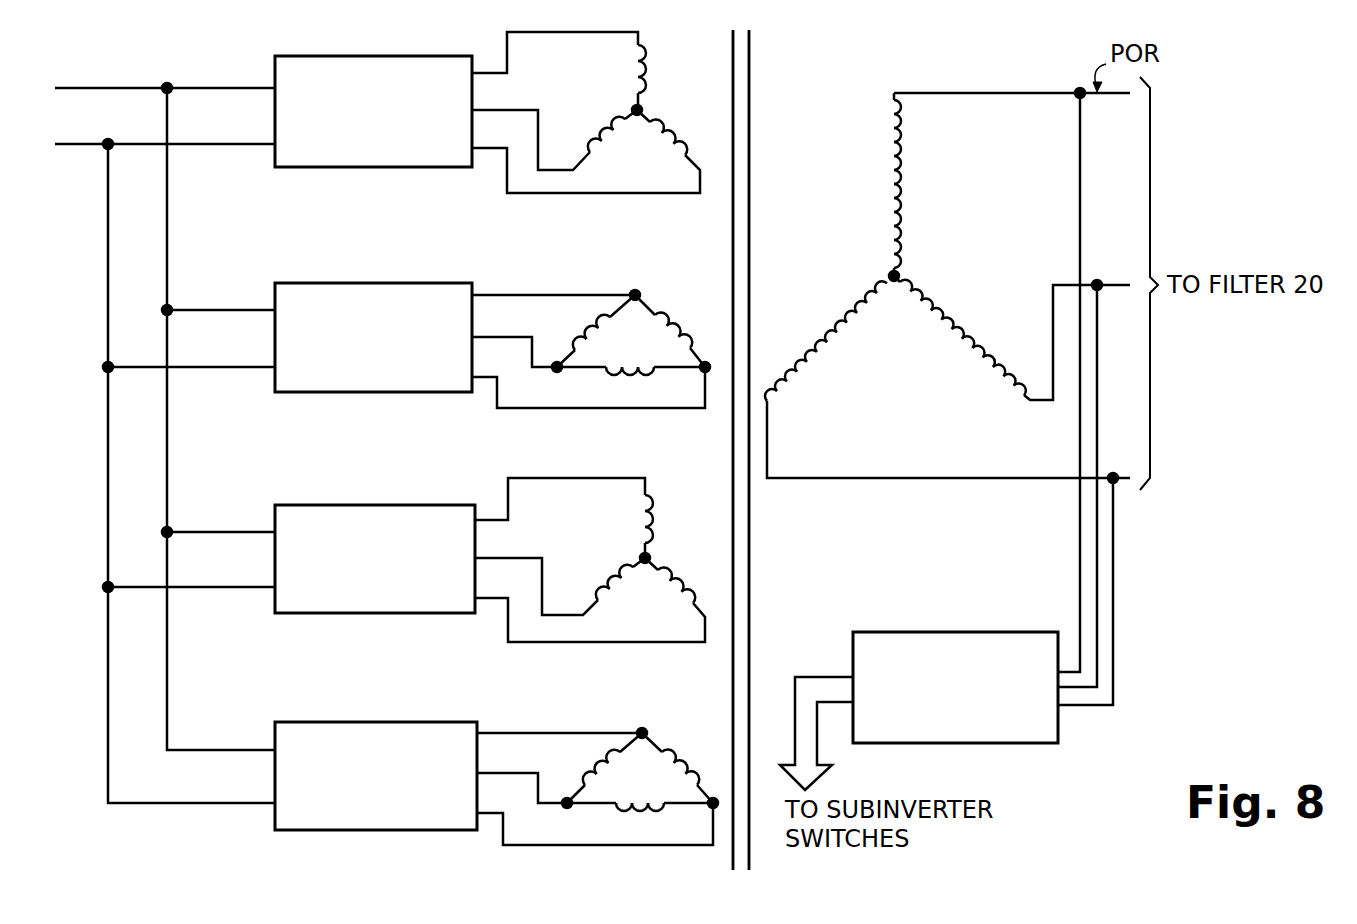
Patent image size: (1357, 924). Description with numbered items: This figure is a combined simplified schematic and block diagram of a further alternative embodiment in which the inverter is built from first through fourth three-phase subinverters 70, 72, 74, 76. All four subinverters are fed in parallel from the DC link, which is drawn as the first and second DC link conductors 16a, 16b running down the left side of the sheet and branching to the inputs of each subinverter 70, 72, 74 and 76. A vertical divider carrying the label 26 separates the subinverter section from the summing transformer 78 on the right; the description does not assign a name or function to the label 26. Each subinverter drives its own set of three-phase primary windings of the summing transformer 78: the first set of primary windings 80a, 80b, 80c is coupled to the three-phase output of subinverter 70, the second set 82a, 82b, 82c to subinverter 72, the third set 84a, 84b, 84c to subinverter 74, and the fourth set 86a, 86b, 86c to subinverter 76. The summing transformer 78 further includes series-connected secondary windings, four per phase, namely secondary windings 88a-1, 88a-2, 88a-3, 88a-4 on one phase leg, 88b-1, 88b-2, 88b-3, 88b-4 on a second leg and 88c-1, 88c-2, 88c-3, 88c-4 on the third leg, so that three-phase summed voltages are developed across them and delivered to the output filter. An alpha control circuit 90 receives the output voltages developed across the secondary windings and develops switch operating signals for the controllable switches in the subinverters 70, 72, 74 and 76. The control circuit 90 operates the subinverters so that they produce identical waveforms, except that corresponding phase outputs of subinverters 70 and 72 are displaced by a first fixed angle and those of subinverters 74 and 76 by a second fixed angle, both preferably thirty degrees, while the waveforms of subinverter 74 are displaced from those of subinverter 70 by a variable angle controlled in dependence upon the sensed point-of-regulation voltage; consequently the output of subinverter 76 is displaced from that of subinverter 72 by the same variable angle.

The first DC link conductor 16a is at (98, 88).
The second DC link conductor 16b is at (86, 144).
The inverter output section 26 is at (753, 72).
The first three-phase subinverter 70 is at (275, 68).
The second three-phase subinverter 72 is at (293, 290).
The third three-phase subinverter 74 is at (293, 518).
The fourth three-phase subinverter 76 is at (334, 723).
The summing transformer 78 is at (942, 285).
The primary winding 80a is at (650, 62).
The primary winding 80b is at (614, 121).
The primary winding 80c is at (666, 130).
The primary winding 82a is at (584, 344).
The primary winding 82b is at (630, 377).
The primary winding 82c is at (680, 322).
The primary winding 84a is at (644, 500).
The primary winding 84b is at (610, 580).
The primary winding 84c is at (690, 588).
The primary winding 86a is at (596, 773).
The primary winding 86b is at (632, 810).
The primary winding 86c is at (684, 758).
The secondary winding 88a-1 is at (900, 110).
The secondary winding 88a-2 is at (900, 150).
The secondary winding 88a-3 is at (900, 193).
The secondary winding 88a-4 is at (900, 233).
The secondary winding 88b-1 is at (1003, 373).
The secondary winding 88b-2 is at (970, 346).
The secondary winding 88b-3 is at (945, 320).
The secondary winding 88b-4 is at (913, 292).
The secondary winding 88c-1 is at (788, 385).
The secondary winding 88c-2 is at (798, 362).
The secondary winding 88c-3 is at (848, 318).
The secondary winding 88c-4 is at (870, 292).
The alpha control circuit 90 is at (984, 640).